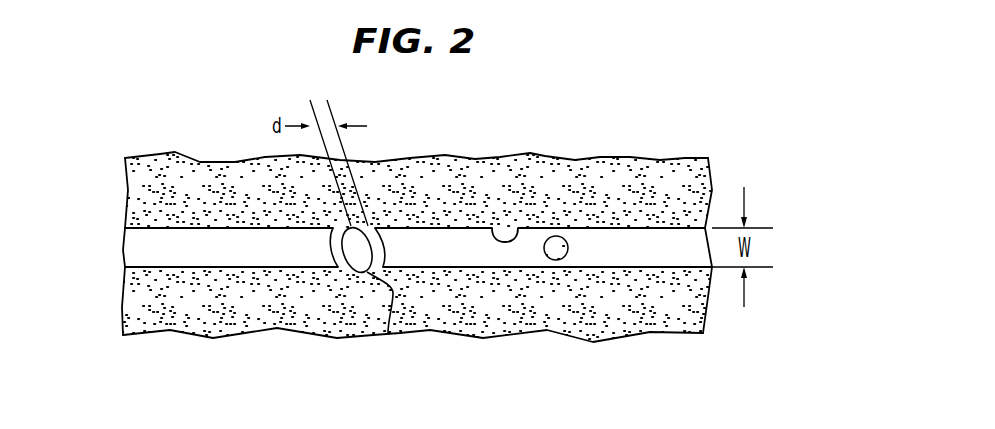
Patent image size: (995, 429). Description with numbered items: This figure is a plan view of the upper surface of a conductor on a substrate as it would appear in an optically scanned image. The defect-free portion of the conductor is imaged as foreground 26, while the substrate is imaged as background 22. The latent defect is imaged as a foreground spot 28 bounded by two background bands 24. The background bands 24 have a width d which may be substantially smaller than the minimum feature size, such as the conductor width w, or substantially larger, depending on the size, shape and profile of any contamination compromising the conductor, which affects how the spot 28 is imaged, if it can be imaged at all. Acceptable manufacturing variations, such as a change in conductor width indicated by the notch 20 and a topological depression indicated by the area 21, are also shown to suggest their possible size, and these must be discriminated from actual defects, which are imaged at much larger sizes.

The notch 20 is at (512, 233).
The area 21 is at (556, 236).
The background 22 is at (650, 160).
The background bands 24 is at (340, 227).
The foreground 26 is at (207, 242).
The foreground spot 28 is at (388, 333).